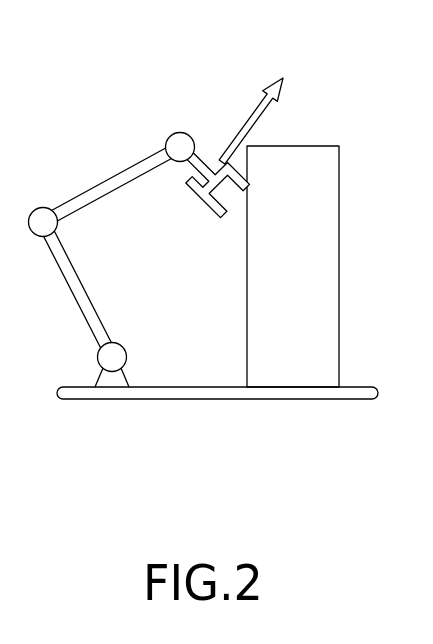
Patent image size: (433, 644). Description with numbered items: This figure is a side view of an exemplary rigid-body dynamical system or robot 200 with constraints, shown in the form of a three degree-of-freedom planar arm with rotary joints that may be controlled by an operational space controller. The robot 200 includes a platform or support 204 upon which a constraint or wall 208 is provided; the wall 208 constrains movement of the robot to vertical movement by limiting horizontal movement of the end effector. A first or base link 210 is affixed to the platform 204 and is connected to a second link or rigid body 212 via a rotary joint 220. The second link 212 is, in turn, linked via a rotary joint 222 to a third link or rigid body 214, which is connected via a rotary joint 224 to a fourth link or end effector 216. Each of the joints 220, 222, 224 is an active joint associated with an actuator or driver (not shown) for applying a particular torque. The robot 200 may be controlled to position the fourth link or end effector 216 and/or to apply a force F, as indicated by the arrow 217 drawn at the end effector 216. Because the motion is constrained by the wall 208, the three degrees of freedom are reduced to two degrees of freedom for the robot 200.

The rigid-body dynamical system or robot 200 is at (140, 206).
The platform or support 204 is at (180, 400).
The constraint or wall 208 is at (340, 338).
The first or base link 210 is at (128, 376).
The second link or rigid body 212 is at (86, 292).
The third link or rigid body 214 is at (92, 186).
The fourth link or end effector 216 is at (187, 184).
The arrow 217 is at (262, 118).
The rotary joint 220 is at (125, 351).
The rotary joint 222 is at (58, 224).
The rotary joint 224 is at (180, 133).